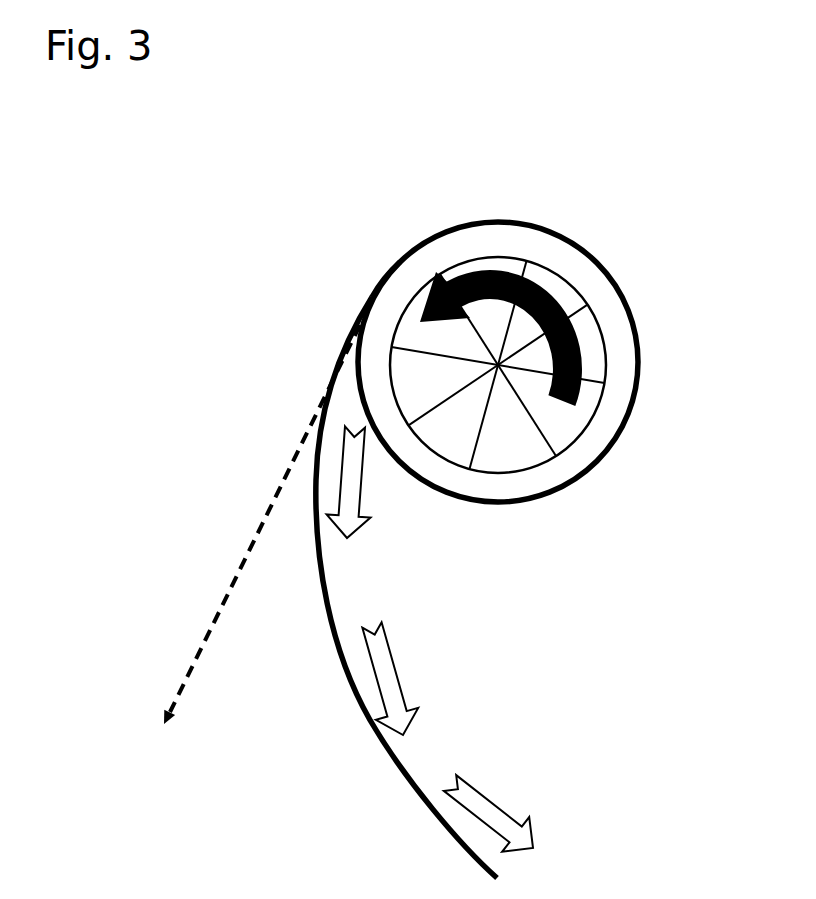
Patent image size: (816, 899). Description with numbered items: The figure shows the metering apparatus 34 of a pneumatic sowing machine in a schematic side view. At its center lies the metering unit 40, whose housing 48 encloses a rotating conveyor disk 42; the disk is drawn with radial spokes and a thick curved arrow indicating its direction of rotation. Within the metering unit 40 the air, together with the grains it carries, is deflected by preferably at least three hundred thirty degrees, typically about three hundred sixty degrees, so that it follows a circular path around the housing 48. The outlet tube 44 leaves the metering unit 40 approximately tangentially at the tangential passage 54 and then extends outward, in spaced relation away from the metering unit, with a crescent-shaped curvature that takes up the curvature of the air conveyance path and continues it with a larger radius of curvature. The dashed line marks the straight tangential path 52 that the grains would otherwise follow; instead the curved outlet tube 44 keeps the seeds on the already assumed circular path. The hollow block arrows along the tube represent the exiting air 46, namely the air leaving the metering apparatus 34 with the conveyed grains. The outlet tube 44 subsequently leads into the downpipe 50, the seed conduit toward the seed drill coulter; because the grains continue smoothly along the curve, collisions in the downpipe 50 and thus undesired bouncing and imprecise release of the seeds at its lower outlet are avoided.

The metering apparatus 34 is at (354, 134).
The metering unit 40 is at (525, 283).
The housing 48 is at (548, 232).
The conveyor disk 42 is at (579, 306).
The outlet tube 44 is at (434, 587).
The downpipe 50 is at (326, 590).
The exiting air 46 is at (430, 639).
The tangential path 52 is at (295, 457).
The tangential passage 54 is at (350, 298).